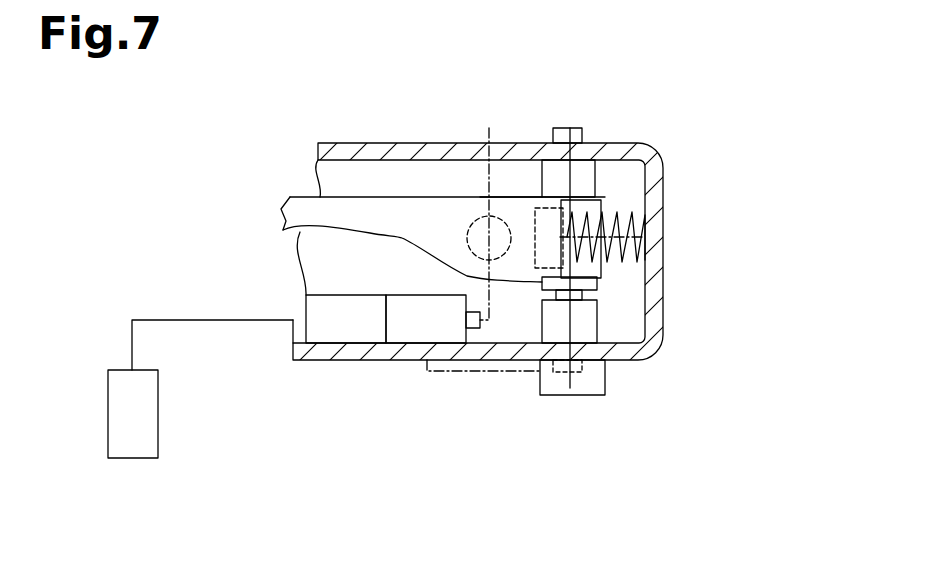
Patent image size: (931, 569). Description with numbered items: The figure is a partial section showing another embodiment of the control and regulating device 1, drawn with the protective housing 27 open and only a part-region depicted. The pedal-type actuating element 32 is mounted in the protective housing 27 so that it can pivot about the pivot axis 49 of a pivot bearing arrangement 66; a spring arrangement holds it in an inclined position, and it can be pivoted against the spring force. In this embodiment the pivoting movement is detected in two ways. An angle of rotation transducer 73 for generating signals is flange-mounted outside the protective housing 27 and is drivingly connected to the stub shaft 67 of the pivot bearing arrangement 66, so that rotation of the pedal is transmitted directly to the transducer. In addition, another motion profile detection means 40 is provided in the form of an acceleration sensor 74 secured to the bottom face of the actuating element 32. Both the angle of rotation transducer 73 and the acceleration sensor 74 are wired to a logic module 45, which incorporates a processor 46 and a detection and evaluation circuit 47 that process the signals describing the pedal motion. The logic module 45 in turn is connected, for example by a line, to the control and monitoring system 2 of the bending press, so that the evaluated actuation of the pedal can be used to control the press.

The control and regulating device 1 is at (716, 160).
The control and monitoring system 2 is at (183, 436).
The protective housing 27 is at (613, 121).
The pedal-type actuating element 32 is at (290, 206).
The motion profile detection means 40 is at (479, 204).
The logic module 45 is at (269, 296).
The processor 46 is at (410, 335).
The detection and evaluation circuit 47 is at (333, 335).
The pivot axis 49 is at (578, 181).
The pivot bearing arrangement 66 is at (529, 320).
The stub shaft 67 is at (580, 372).
The angle of rotation transducer 73 is at (594, 380).
The acceleration sensor 74 is at (488, 214).